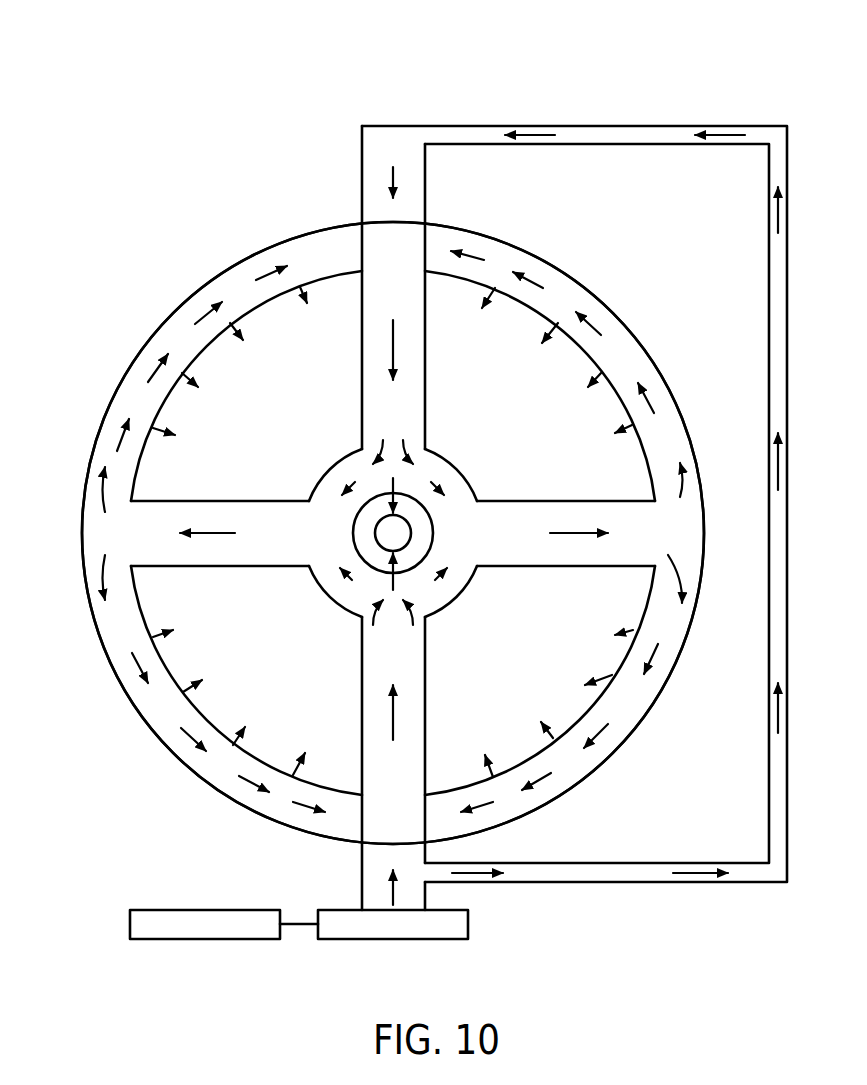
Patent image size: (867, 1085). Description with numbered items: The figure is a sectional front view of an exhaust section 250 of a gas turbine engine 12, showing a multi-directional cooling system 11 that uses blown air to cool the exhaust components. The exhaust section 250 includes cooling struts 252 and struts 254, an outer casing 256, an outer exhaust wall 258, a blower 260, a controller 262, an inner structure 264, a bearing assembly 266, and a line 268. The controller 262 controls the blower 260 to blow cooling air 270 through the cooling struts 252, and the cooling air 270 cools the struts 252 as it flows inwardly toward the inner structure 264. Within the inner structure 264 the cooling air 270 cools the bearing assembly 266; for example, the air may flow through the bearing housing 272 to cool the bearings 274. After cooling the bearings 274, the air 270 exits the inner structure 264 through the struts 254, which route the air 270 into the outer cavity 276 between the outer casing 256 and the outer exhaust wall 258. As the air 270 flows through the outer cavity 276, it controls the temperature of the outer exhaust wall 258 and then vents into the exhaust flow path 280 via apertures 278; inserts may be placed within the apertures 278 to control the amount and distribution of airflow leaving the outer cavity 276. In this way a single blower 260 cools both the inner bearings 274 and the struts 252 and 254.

The multi-directional cooling system 11 is at (255, 1012).
The gas turbine engine 12 is at (768, 97).
The exhaust section 250 is at (150, 192).
The cooling struts 252 is at (426, 405).
The struts 254 is at (205, 568).
The outer casing 256 is at (100, 648).
The outer exhaust wall 258 is at (170, 393).
The blower 260 is at (390, 940).
The controller 262 is at (205, 940).
The inner structure 264 is at (325, 472).
The bearing assembly 266 is at (448, 517).
The line 268 is at (788, 628).
The cooling air 270 is at (135, 402).
The bearing housing 272 is at (433, 533).
The bearings 274 is at (377, 533).
The outer cavity 276 is at (153, 355).
The apertures 278 is at (229, 332).
The exhaust flow path 280 is at (270, 478).